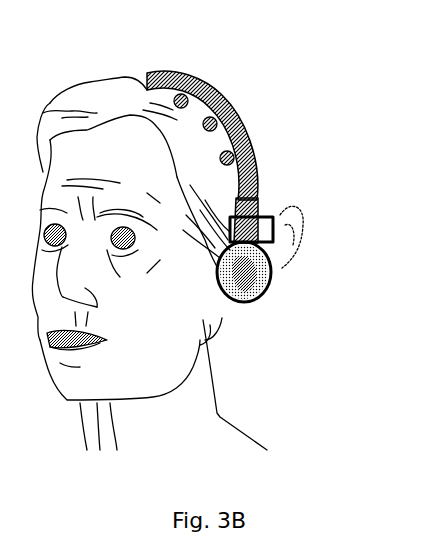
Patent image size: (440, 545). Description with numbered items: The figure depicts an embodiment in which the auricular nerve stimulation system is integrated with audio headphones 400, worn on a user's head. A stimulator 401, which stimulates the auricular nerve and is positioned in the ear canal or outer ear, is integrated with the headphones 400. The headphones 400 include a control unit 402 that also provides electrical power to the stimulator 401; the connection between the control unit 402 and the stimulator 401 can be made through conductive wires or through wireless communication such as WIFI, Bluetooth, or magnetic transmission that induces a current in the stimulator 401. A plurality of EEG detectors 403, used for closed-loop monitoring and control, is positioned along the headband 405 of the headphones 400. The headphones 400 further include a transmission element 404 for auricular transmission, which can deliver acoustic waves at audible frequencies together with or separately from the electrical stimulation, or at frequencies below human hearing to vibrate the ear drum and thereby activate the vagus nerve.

The headphones 400 is at (270, 210).
The stimulator 401 is at (250, 301).
The control unit 402 is at (273, 230).
The EEG detectors 403 is at (230, 153).
The transmission element 404 is at (268, 283).
The headband 405 is at (178, 73).